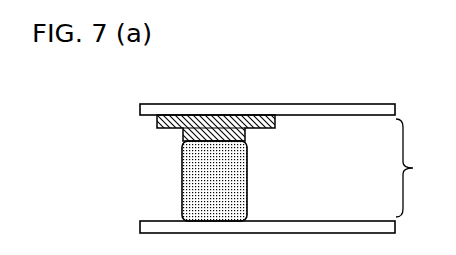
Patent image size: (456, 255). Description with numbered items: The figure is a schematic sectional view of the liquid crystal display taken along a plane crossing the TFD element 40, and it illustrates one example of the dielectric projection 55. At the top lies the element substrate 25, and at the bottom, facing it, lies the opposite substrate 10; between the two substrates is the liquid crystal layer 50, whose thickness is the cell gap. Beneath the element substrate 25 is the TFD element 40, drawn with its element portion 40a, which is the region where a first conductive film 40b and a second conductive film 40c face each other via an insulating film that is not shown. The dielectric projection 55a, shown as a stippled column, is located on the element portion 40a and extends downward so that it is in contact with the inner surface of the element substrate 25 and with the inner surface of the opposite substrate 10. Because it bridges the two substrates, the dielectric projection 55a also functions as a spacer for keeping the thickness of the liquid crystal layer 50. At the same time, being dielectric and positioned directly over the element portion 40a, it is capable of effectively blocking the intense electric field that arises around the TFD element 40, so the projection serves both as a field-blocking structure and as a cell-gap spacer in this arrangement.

The opposite substrate 10 is at (395, 227).
The element substrate 25 is at (395, 109).
The liquid crystal layer 50 is at (419, 168).
The TFD element 40 is at (216, 112).
The element portion 40a is at (235, 99).
The first conductive film 40b is at (182, 130).
The second conductive film 40c is at (273, 128).
The dielectric projection 55a is at (247, 199).
The dielectric projection 55 is at (272, 181).